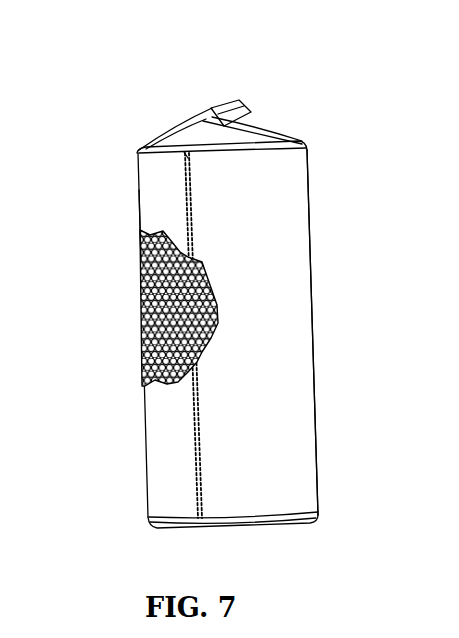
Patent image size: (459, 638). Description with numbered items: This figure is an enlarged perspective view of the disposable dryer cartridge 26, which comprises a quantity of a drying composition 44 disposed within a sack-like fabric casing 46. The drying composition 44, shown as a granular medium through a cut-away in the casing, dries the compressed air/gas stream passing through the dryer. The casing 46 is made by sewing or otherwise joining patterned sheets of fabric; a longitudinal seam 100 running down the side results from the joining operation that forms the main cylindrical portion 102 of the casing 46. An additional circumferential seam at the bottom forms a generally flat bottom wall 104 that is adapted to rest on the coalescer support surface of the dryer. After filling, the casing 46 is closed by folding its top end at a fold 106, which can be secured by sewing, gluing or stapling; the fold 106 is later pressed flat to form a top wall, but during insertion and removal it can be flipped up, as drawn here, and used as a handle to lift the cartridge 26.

The cartridge 26 is at (338, 319).
The drying composition 44 is at (142, 277).
The fabric casing 46 is at (139, 214).
The longitudinal seam 100 is at (194, 475).
The main cylindrical portion 102 is at (280, 207).
The bottom wall 104 is at (257, 522).
The fold 106 is at (221, 110).